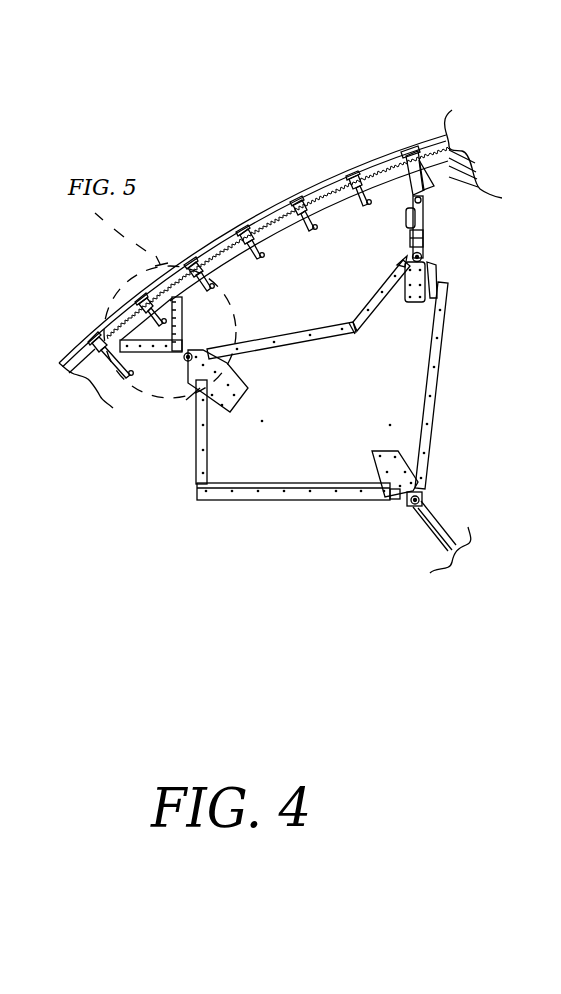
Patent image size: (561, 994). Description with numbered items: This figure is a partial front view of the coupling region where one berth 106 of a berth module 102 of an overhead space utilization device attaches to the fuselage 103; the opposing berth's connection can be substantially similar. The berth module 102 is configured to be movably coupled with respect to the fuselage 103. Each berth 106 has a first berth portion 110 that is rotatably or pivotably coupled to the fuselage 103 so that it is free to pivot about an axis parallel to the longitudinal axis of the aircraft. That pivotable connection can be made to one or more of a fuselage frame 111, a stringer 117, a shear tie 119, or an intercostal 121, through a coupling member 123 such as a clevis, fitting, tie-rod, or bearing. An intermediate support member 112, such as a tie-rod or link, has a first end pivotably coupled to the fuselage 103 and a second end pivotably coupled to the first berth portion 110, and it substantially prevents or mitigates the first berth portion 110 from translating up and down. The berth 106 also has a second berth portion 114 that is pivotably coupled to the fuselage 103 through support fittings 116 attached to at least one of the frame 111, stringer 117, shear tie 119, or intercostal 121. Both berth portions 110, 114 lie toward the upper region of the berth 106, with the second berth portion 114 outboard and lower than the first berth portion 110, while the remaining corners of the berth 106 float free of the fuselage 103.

The berth module 102 is at (172, 468).
The fuselage 103 is at (425, 137).
The berth 106 is at (323, 500).
The first berth portion 110 is at (416, 328).
The fuselage frame 111 is at (423, 202).
The intermediate support member 112 is at (414, 206).
The second berth portion 114 is at (230, 432).
The support fittings 116 is at (170, 298).
The stringer 117 is at (400, 171).
The shear tie 119 is at (276, 228).
The intercostal 121 is at (247, 227).
The coupling member 123 is at (412, 188).